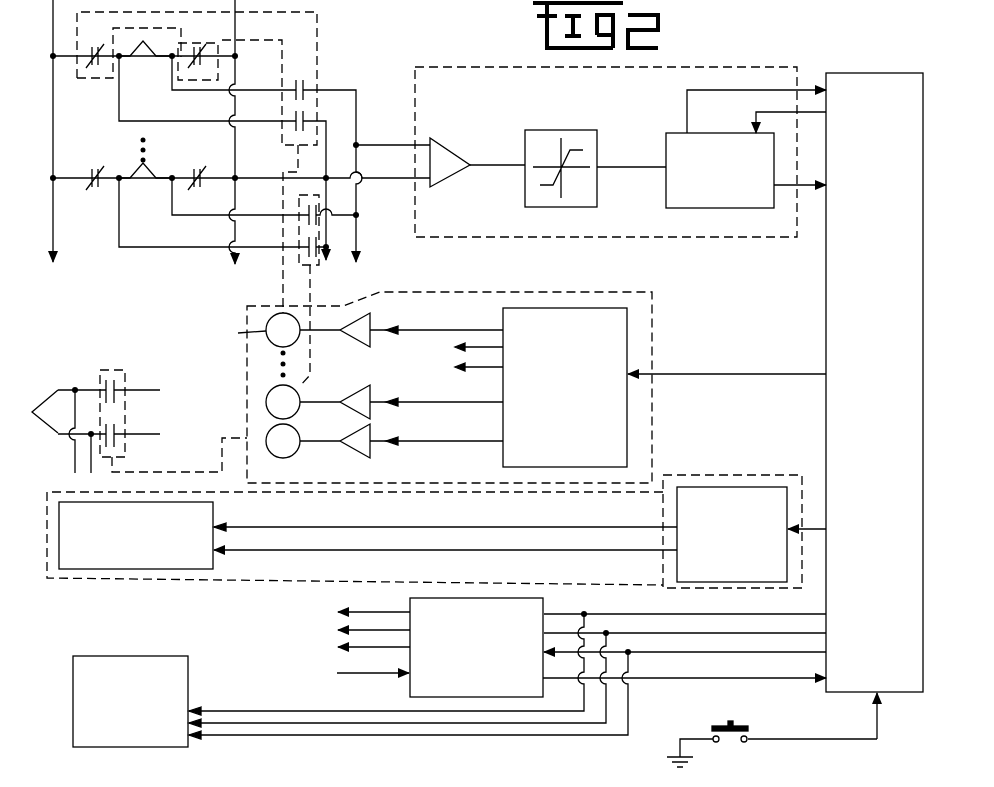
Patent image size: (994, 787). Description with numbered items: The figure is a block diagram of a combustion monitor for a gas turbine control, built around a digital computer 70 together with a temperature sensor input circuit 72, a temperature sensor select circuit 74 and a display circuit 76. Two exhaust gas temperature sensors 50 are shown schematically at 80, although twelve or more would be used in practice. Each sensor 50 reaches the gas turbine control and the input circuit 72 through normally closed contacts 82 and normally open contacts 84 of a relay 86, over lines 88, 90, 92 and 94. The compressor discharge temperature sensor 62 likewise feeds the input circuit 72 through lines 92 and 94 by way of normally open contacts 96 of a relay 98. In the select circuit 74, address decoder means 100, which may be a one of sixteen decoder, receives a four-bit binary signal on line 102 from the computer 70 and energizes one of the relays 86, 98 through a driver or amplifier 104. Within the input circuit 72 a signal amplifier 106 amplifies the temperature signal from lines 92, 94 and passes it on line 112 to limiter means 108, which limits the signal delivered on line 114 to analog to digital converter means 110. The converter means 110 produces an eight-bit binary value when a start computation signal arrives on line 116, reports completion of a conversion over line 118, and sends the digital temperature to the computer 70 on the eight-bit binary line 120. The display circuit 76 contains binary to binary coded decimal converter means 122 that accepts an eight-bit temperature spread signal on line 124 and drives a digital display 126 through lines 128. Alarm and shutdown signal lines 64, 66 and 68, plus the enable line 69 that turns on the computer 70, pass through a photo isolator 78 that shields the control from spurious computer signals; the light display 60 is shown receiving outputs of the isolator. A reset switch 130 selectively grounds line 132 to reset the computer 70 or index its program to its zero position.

The exhaust gas temperature sensor 50 is at (144, 42).
The light display 60 is at (130, 701).
The compressor discharge temperature sensor 62 is at (137, 356).
The alarm and shutdown signal line 64 is at (380, 595).
The alarm and shutdown signal line 66 is at (350, 630).
The alarm and shutdown signal line 68 is at (350, 650).
The enable signal line 69 is at (668, 678).
The digital computer 70 is at (875, 63).
The temperature sensor input circuit 72 is at (744, 70).
The temperature sensor select circuit 74 is at (657, 304).
The display circuit 76 is at (240, 578).
The photo isolator 78 is at (505, 598).
The exhaust gas temperature sensor group 80 is at (330, 40).
The normally closed contacts 82 is at (92, 68).
The normally open contacts 84 is at (307, 84).
The relay 86 is at (250, 333).
The line 88 is at (57, 232).
The line 90 is at (232, 265).
The line 92 is at (333, 263).
The line 94 is at (359, 256).
The normally open contacts 96 is at (120, 377).
The relay 98 is at (296, 452).
The address decoder means 100 is at (620, 440).
The line 102 is at (713, 372).
The driver or amplifier 104 is at (374, 325).
The signal amplifier 106 is at (455, 150).
The limiter means 108 is at (590, 131).
The analog to digital converter means 110 is at (700, 208).
The line 112 is at (475, 168).
The line 114 is at (627, 167).
The line 116 is at (756, 118).
The line 118 is at (687, 107).
The 8-bit binary line 120 is at (808, 185).
The binary to binary coded decimal converter means 122 is at (760, 480).
The line 124 is at (818, 529).
The digital display 126 is at (130, 570).
The lines 128 is at (472, 527).
The reset switch 130 is at (757, 722).
The line 132 is at (812, 739).